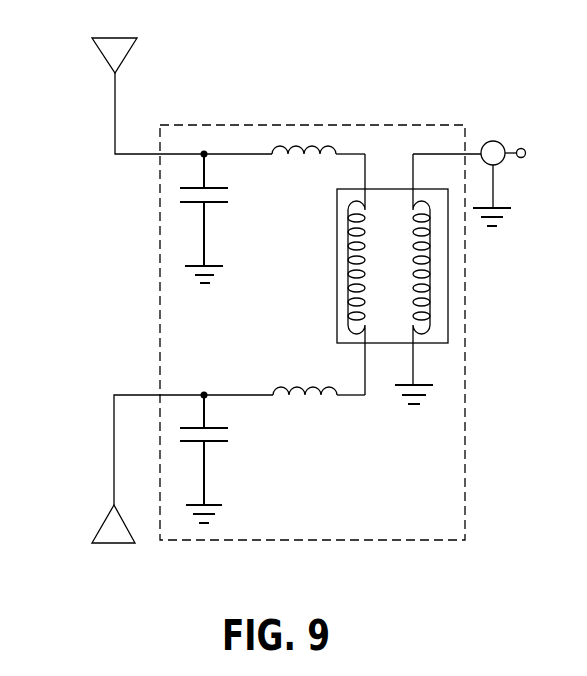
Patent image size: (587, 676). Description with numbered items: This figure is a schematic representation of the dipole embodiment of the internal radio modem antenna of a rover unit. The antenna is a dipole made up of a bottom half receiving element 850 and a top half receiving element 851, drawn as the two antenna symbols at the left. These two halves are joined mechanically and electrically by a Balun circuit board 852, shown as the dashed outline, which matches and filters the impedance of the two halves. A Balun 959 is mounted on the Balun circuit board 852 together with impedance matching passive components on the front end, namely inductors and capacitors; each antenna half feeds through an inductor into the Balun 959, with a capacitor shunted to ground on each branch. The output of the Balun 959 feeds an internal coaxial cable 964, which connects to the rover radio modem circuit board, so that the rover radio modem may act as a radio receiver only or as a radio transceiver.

The bottom half receiving element 850 is at (114, 475).
The top half receiving element 851 is at (114, 128).
The Balun circuit board 852 is at (306, 125).
The Balun 959 is at (449, 296).
The internal coaxial cable 964 is at (492, 141).